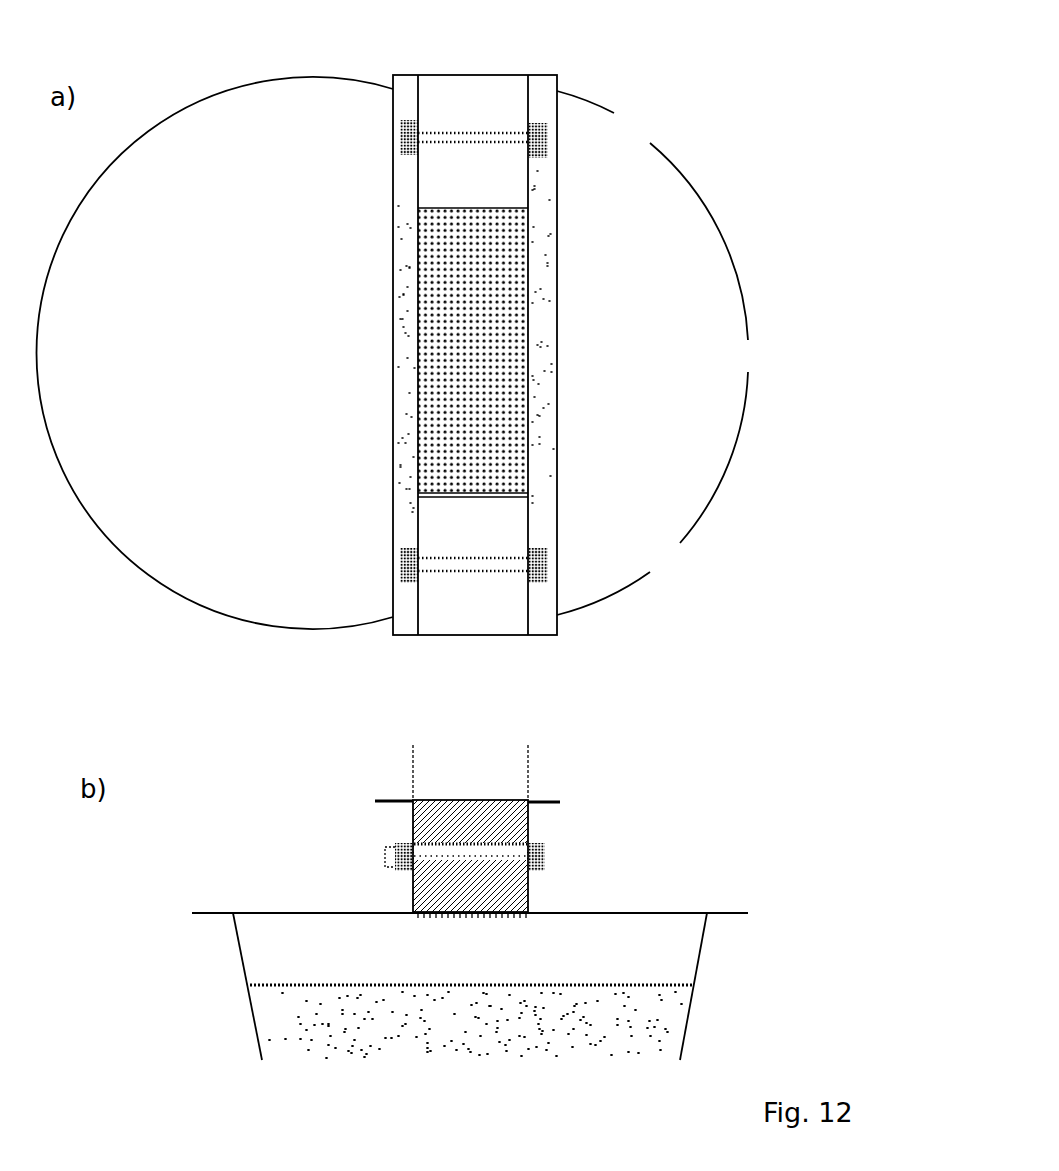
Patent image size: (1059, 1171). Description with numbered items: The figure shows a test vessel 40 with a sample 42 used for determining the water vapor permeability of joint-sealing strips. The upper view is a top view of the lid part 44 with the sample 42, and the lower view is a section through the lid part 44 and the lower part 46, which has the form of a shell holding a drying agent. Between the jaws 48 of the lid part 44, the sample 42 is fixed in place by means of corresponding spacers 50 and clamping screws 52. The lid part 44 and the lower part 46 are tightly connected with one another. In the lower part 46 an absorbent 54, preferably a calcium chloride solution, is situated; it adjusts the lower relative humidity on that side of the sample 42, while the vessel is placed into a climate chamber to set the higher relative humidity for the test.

The test vessel 40 is at (733, 840).
The sample 42 is at (475, 360).
The lid part 44 is at (283, 193).
The lower part 46 is at (240, 958).
The jaws 48 is at (543, 315).
The spacers 50 is at (476, 140).
The clamping screws 52 is at (550, 140).
The absorbent 54 is at (471, 1021).